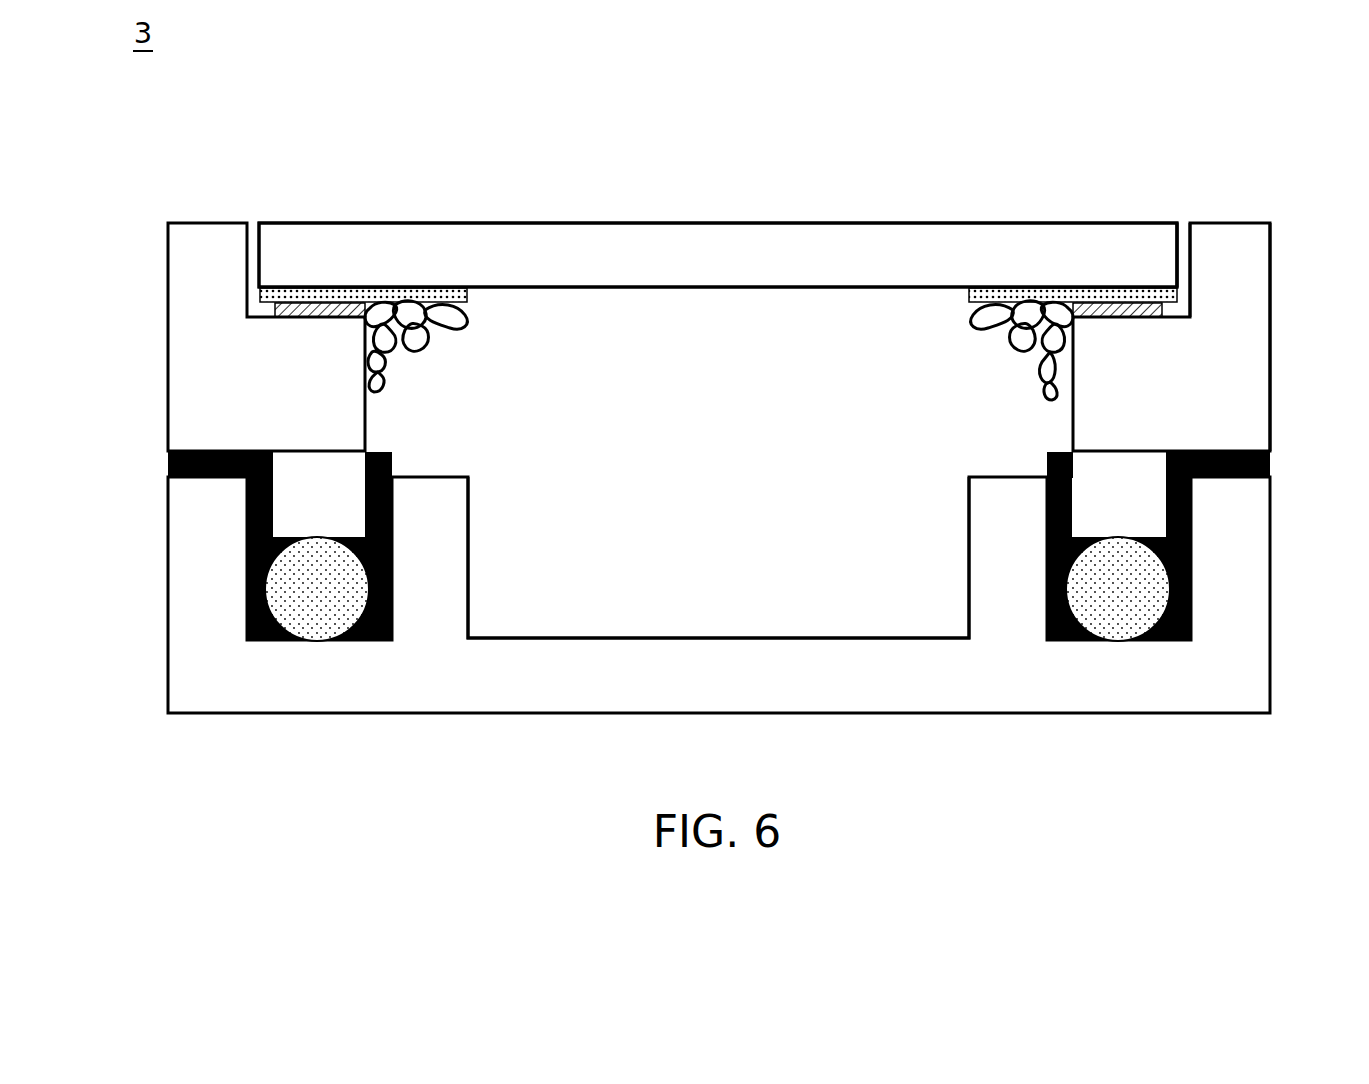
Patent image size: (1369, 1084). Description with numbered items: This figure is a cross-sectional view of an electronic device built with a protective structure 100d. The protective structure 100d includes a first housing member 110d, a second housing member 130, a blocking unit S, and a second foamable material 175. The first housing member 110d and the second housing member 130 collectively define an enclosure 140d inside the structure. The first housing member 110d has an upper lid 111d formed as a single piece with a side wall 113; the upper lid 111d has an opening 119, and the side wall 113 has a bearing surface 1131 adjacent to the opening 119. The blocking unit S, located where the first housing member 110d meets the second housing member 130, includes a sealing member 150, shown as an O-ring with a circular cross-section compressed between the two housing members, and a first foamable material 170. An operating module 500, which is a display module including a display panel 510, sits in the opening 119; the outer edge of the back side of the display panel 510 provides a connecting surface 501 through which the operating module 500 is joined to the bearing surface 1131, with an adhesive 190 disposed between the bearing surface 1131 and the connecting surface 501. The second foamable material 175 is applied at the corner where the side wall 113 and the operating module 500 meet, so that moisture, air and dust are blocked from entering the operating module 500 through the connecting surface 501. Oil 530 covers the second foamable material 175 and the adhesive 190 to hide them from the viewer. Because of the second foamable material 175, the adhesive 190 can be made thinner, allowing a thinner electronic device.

The protective structure 100d is at (142, 189).
The first housing member 110d is at (165, 383).
The upper lid 111d is at (1258, 277).
The side wall 113 is at (1258, 382).
The bearing surface 1131 is at (313, 320).
The opening 119 is at (1183, 242).
The second housing member 130 is at (165, 632).
The enclosure 140d is at (752, 575).
The sealing member 150 is at (290, 580).
The first foamable material 170 is at (178, 466).
The second foamable material 175 is at (405, 345).
The adhesive 190 is at (277, 313).
The operating module 500 is at (382, 153).
The connecting surface 501 is at (365, 278).
The display panel 510 is at (592, 243).
The oil 530 is at (405, 290).
The blocking unit S is at (76, 440).